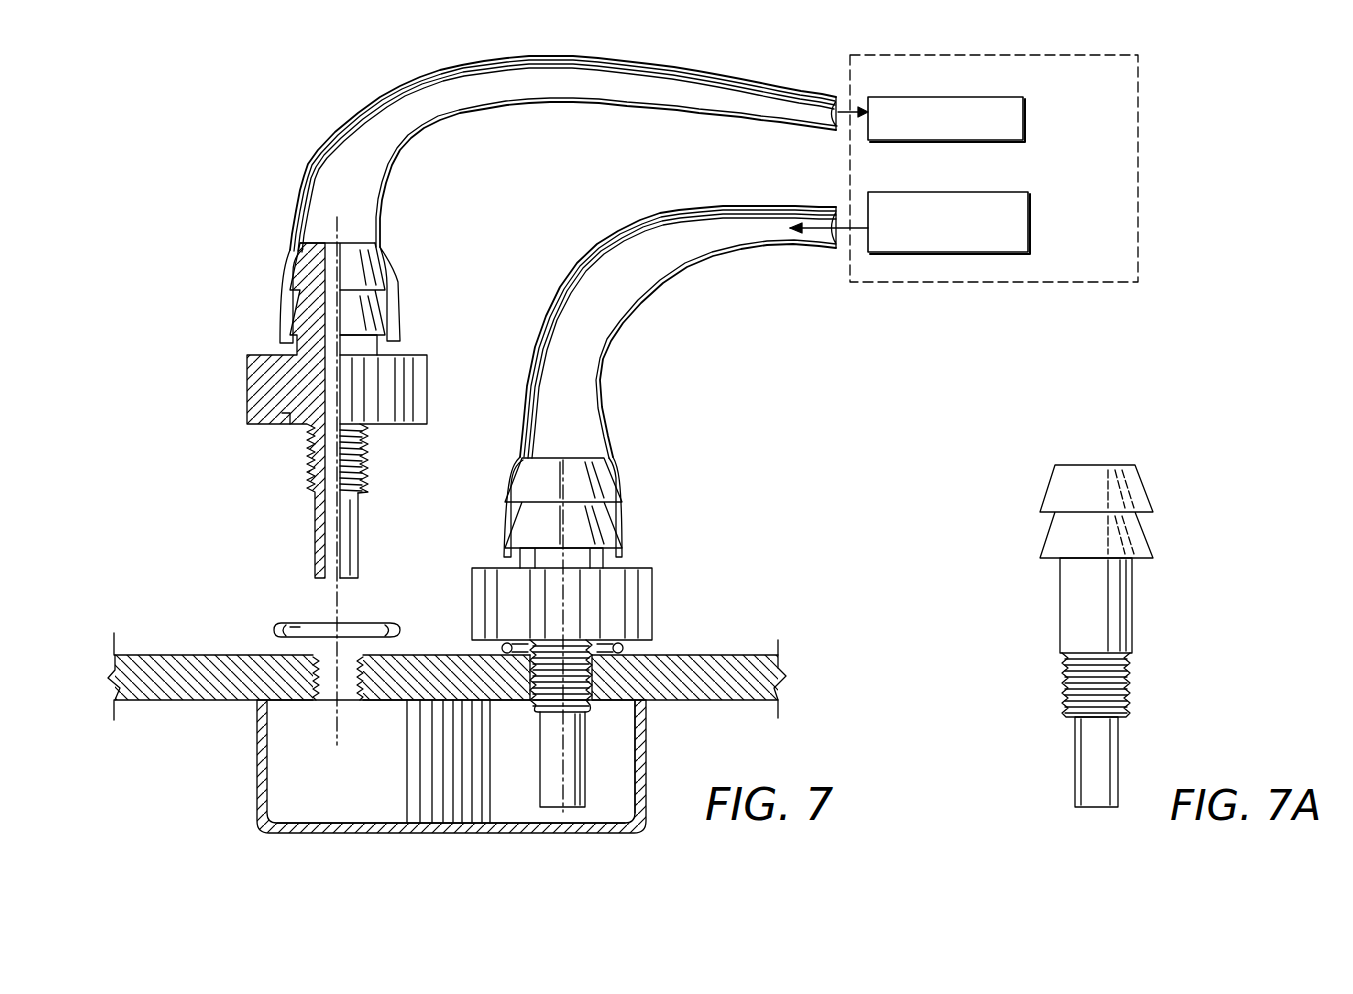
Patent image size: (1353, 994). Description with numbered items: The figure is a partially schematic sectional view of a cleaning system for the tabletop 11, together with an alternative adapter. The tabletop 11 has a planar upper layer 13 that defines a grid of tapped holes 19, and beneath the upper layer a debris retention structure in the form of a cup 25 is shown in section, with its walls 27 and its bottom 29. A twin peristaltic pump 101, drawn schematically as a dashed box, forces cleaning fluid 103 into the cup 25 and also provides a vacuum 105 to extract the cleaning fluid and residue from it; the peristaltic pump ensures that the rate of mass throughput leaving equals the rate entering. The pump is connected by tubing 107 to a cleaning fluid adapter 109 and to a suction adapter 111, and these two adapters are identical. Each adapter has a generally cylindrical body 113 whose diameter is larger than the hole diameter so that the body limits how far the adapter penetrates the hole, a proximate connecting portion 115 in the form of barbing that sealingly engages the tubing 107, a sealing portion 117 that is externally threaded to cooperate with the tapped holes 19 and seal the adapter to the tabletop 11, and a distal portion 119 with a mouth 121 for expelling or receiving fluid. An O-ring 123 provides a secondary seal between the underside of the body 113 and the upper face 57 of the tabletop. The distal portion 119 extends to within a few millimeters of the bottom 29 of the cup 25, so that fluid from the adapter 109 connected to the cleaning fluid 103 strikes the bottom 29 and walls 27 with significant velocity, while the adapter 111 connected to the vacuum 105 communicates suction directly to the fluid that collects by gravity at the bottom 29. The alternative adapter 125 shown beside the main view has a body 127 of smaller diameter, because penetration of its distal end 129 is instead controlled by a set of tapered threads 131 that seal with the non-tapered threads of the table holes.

In FIG. 7, the tabletop 11 is at (143, 632).
In FIG. 7, the upper layer 13 is at (767, 630).
In FIG. 7, the tapped holes 19 is at (327, 698).
In FIG. 7, the cup 25 is at (238, 748).
In FIG. 7, the walls 27 is at (648, 735).
In FIG. 7, the bottom 29 is at (280, 840).
In FIG. 7, the upper face 57 is at (680, 655).
In FIG. 7, the twin peristaltic pump 101 is at (1138, 137).
In FIG. 7, the cleaning fluid 103 is at (1028, 222).
In FIG. 7, the vacuum 105 is at (1023, 118).
In FIG. 7, the tubing 107 is at (633, 106).
In FIG. 7, the cleaning fluid adapter 109 is at (752, 532).
In FIG. 7, the suction adapter 111 is at (233, 370).
In FIG. 7, the cylindrical body 113 is at (247, 410).
In FIG. 7, the proximate connecting portion 115 is at (351, 244).
In FIG. 7, the sealing portion 117 is at (307, 460).
In FIG. 7, the distal portion 119 is at (317, 527).
In FIG. 7, the mouth 121 is at (333, 580).
In FIG. 7, the O-ring 123 is at (275, 628).
In FIG. 7A, the adapter 125 is at (1192, 636).
In FIG. 7A, the body 127 is at (1133, 612).
In FIG. 7A, the distal end 129 is at (1120, 753).
In FIG. 7A, the tapered threads 131 is at (1133, 683).